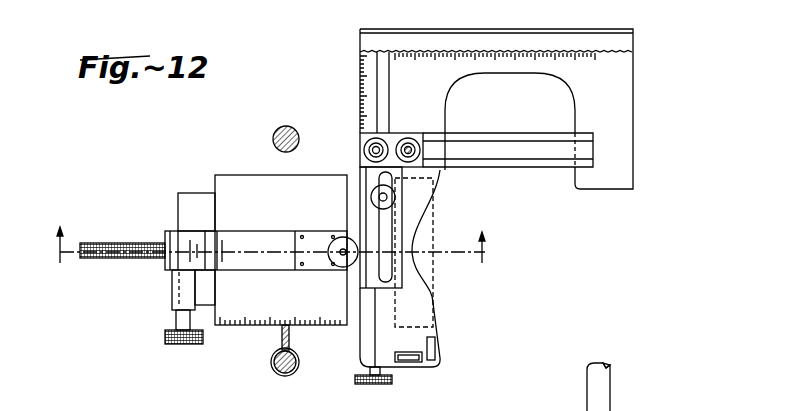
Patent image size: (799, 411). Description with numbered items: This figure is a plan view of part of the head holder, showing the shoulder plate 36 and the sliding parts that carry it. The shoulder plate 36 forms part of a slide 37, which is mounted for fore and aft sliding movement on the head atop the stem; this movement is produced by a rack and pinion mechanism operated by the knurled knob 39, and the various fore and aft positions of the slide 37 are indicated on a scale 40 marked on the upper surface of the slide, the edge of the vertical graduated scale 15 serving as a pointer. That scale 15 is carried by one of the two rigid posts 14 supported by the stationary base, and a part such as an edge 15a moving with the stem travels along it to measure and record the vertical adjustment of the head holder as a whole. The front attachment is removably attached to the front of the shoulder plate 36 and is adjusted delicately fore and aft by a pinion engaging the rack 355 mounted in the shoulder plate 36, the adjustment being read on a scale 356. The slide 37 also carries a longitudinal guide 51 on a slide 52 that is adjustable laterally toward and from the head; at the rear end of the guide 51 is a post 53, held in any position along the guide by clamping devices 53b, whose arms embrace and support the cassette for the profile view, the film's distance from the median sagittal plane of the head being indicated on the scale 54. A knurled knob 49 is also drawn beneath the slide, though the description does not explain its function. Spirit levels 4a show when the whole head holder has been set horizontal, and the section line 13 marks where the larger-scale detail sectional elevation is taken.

The spirit levels 4a is at (447, 359).
The section line 13— 13 is at (266, 243).
The rigid posts 14 is at (284, 128).
The vertical graduated scale 15 is at (290, 345).
The edge 15a is at (268, 330).
The shoulder plate 36 is at (614, 155).
The slide 37 is at (250, 290).
The knurled knob 39 is at (175, 348).
The scale 40 is at (228, 328).
The locking knob 49 is at (372, 387).
The longitudinal guide 51 is at (512, 112).
The slide 52 is at (372, 205).
The post 53 is at (418, 137).
The clamping devices 53b is at (385, 140).
The scale 54 is at (360, 86).
The rack 355 is at (580, 50).
The scale 356 is at (612, 63).